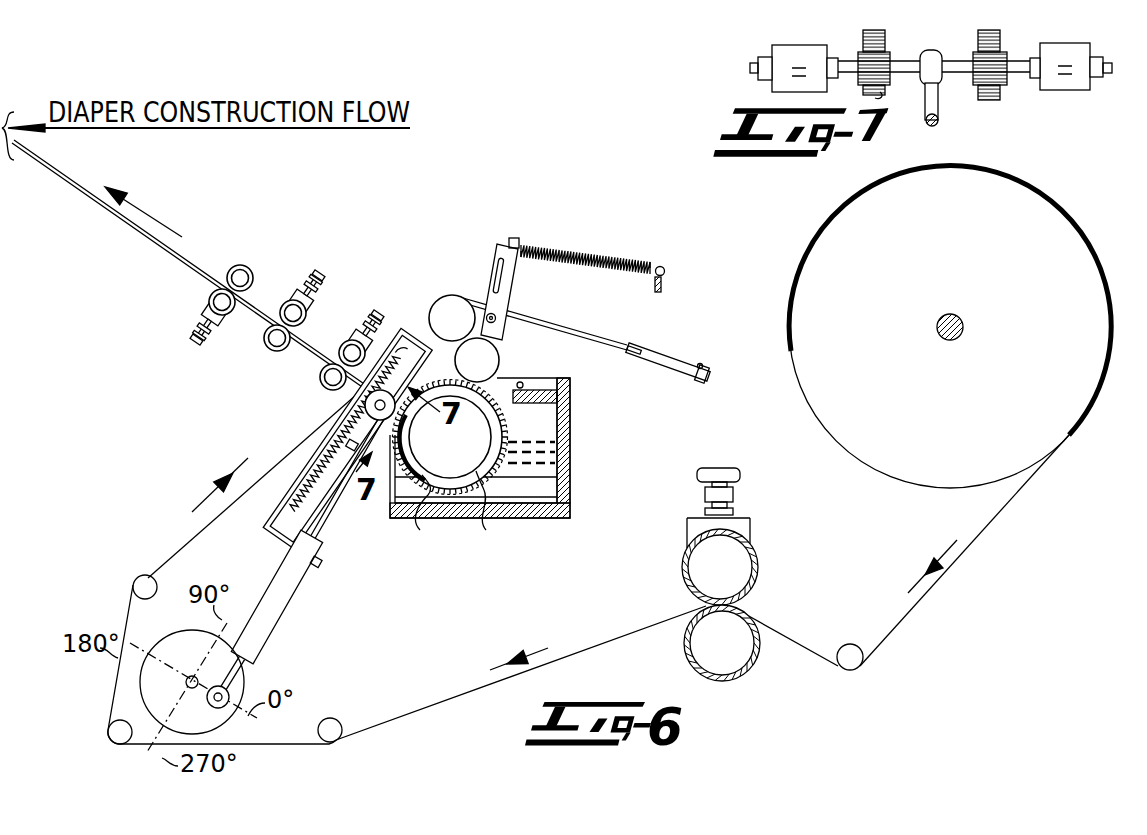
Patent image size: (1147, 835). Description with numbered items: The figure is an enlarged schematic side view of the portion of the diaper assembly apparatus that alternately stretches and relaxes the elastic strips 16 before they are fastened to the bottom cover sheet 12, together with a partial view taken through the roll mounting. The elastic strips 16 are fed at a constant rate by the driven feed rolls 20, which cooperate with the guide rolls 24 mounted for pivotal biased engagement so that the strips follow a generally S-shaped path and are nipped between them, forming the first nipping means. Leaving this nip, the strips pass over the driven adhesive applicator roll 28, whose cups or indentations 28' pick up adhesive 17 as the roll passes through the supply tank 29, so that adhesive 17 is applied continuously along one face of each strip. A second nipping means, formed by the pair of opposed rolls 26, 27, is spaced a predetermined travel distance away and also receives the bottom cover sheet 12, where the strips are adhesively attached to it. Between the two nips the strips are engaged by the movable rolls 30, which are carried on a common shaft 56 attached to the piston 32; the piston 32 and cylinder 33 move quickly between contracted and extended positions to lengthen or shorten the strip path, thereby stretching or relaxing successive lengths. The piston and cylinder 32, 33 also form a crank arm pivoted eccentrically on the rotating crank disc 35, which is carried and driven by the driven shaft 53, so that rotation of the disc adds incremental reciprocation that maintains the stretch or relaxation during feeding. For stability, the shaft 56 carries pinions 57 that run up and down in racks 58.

In FIG. 6, the bottom cover sheet 12 is at (186, 261).
In FIG. 6, the elastic strips 16 is at (187, 263).
In FIG. 6, the adhesive 17 is at (540, 440).
In FIG. 6, the feed rolls 20 is at (455, 300).
In FIG. 6, the guide rolls 24 is at (485, 350).
In FIG. 6, the opposed roll 26 is at (349, 347).
In FIG. 6, the opposed roll 27 is at (321, 377).
In FIG. 6, the adhesive applicator roll 28 is at (498, 514).
In FIG. 6, the cups or indentations 28' is at (435, 517).
In FIG. 6, the supply tank 29 is at (570, 492).
In FIG. 6, the elastic strip engaging rolls 30 is at (376, 405).
In FIG. 7, the elastic strip engaging rolls 30 is at (770, 70).
In FIG. 6, the piston 32 is at (324, 520).
In FIG. 7, the piston 32 is at (935, 122).
In FIG. 6, the cylinder 33 is at (292, 588).
In FIG. 6, the crank disc 35 is at (180, 642).
In FIG. 6, the driven shaft 53 is at (229, 692).
In FIG. 7, the common shaft 56 is at (955, 60).
In FIG. 7, the pinions 57 is at (978, 66).
In FIG. 6, the racks 58 is at (316, 484).
In FIG. 7, the racks 58 is at (880, 92).